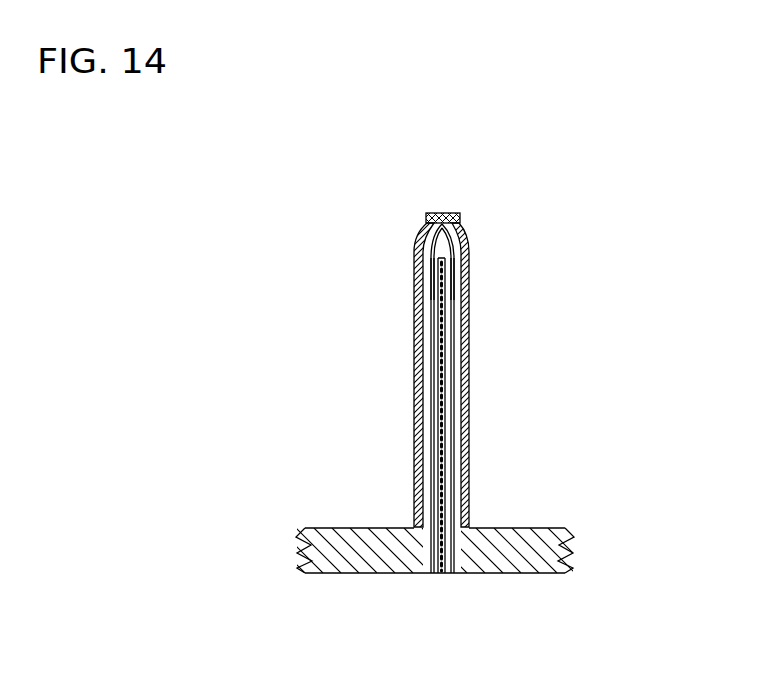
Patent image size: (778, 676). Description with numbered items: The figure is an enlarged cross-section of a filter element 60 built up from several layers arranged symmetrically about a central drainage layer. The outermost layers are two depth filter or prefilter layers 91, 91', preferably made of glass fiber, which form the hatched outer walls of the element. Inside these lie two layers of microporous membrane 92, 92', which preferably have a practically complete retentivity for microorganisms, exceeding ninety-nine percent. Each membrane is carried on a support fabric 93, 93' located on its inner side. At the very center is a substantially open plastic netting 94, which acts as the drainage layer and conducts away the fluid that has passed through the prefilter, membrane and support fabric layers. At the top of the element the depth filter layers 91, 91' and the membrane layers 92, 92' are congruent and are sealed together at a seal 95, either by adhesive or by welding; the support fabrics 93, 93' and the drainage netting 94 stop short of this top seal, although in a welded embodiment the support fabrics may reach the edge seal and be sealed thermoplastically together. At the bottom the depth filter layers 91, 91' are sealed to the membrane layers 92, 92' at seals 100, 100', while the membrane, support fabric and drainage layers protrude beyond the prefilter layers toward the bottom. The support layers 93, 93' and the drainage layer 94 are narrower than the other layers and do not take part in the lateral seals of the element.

The filter element 60 is at (415, 458).
The depth filter layer 91 is at (393, 380).
The depth filter layer 91' is at (501, 380).
The microporous membrane layer 92 is at (392, 398).
The microporous membrane layer 92' is at (497, 398).
The support fabric 93 is at (387, 279).
The support fabric 93' is at (500, 287).
The plastic netting 94 is at (443, 258).
The top seal 95 is at (437, 213).
The bottom seal 100 is at (426, 580).
The bottom seal 100' is at (518, 580).